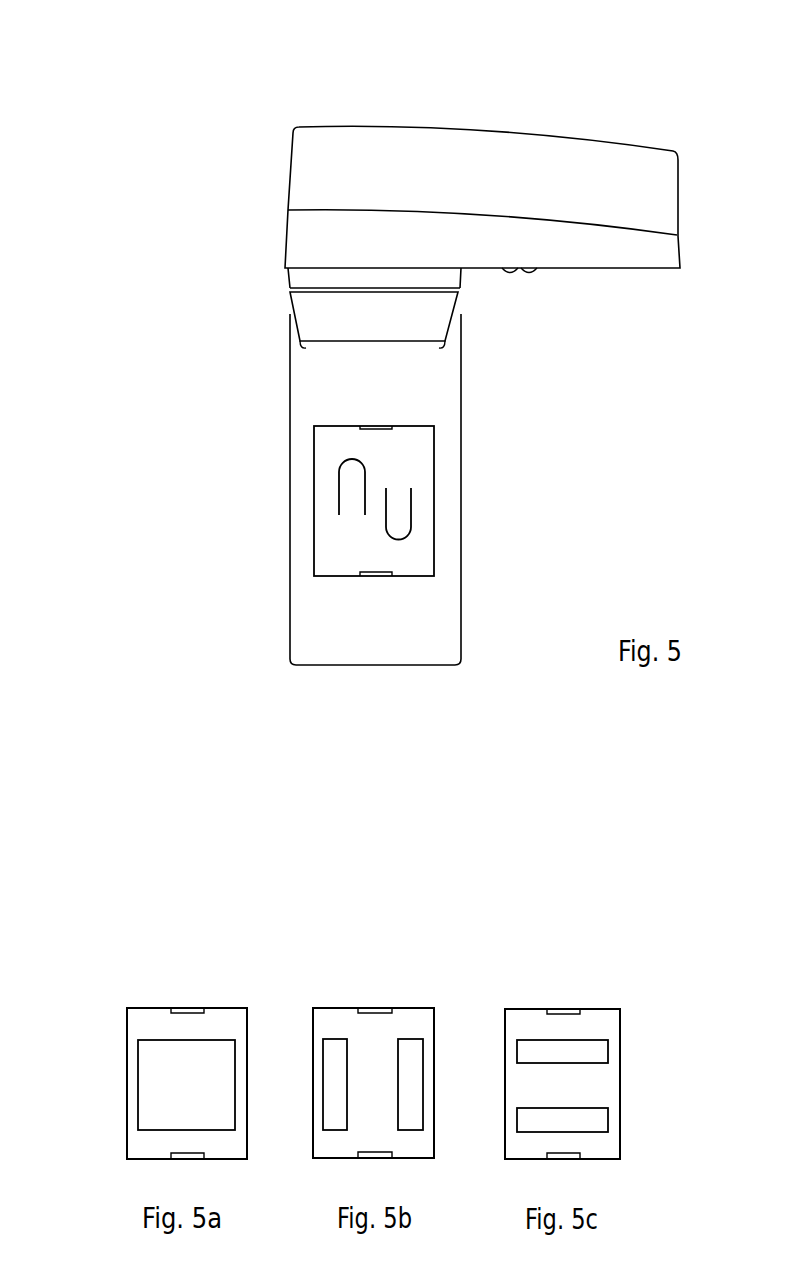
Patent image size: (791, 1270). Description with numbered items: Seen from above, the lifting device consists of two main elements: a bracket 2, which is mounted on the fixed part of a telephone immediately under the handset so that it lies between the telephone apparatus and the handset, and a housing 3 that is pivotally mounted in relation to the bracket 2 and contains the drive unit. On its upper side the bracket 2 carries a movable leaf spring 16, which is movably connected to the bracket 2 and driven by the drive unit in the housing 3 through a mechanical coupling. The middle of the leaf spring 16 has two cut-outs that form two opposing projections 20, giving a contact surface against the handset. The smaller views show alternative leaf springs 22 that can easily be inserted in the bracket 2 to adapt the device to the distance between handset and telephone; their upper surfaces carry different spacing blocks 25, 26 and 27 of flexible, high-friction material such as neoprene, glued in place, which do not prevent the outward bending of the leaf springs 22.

In FIG. 5, the bracket 2 is at (417, 653).
In FIG. 5, the housing 3 is at (585, 152).
In FIG. 5, the leaf spring 16 is at (434, 451).
In FIG. 5, the projections 20 is at (350, 478).
In FIG. 5A, the leaf spring 22 is at (127, 1022).
In FIG. 5A, the spacing block 25 is at (152, 1085).
In FIG. 5B, the spacing blocks 26 is at (333, 1045).
In FIG. 5C, the spacing blocks 27 is at (593, 1052).